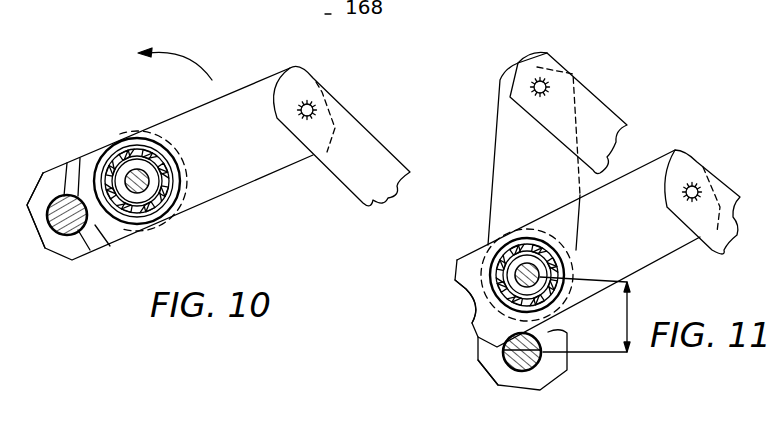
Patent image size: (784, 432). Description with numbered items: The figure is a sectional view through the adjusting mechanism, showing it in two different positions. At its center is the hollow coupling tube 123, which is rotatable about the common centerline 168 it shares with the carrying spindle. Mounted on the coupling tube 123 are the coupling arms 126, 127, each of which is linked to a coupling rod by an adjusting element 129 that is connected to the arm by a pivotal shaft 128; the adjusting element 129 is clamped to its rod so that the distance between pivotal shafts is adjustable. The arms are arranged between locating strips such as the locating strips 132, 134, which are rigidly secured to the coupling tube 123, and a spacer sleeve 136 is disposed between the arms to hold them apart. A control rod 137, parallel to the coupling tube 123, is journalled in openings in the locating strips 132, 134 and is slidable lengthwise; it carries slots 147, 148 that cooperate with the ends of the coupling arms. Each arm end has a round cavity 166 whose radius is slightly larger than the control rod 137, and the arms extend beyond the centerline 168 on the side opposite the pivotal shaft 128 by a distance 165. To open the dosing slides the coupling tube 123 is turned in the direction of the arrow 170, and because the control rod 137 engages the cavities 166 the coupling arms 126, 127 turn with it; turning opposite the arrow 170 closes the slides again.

In FIG. 10, the arrow 170 is at (187, 62).
In FIG. 10, the coupling arm 126 is at (250, 100).
In FIG. 11, the coupling arm 126 is at (490, 192).
In FIG. 11, the coupling arm 127 is at (605, 200).
In FIG. 10, the pivotal shaft 128 is at (311, 110).
In FIG. 11, the pivotal shaft 128 is at (694, 184).
In FIG. 10, the adjusting element 129 is at (373, 157).
In FIG. 11, the adjusting element 129 is at (723, 244).
In FIG. 10, the coupling tube 123 is at (132, 165).
In FIG. 10, the round cavity 166 is at (80, 167).
In FIG. 11, the round cavity 166 is at (470, 303).
In FIG. 10, the locating strip 134 is at (45, 180).
In FIG. 11, the locating strip 134 is at (492, 372).
In FIG. 10, the common centerline 168 is at (147, 173).
In FIG. 11, the common centerline 168 is at (527, 275).
In FIG. 10, the spacer sleeve 136 is at (162, 223).
In FIG. 11, the spacer sleeve 136 is at (557, 253).
In FIG. 10, the control rod 137 is at (43, 235).
In FIG. 11, the control rod 137 is at (514, 377).
In FIG. 10, the slot 147 is at (110, 248).
In FIG. 11, the locating strip 132 is at (460, 275).
In FIG. 11, the distance 165 is at (627, 333).
In FIG. 11, the slot 148 is at (503, 350).